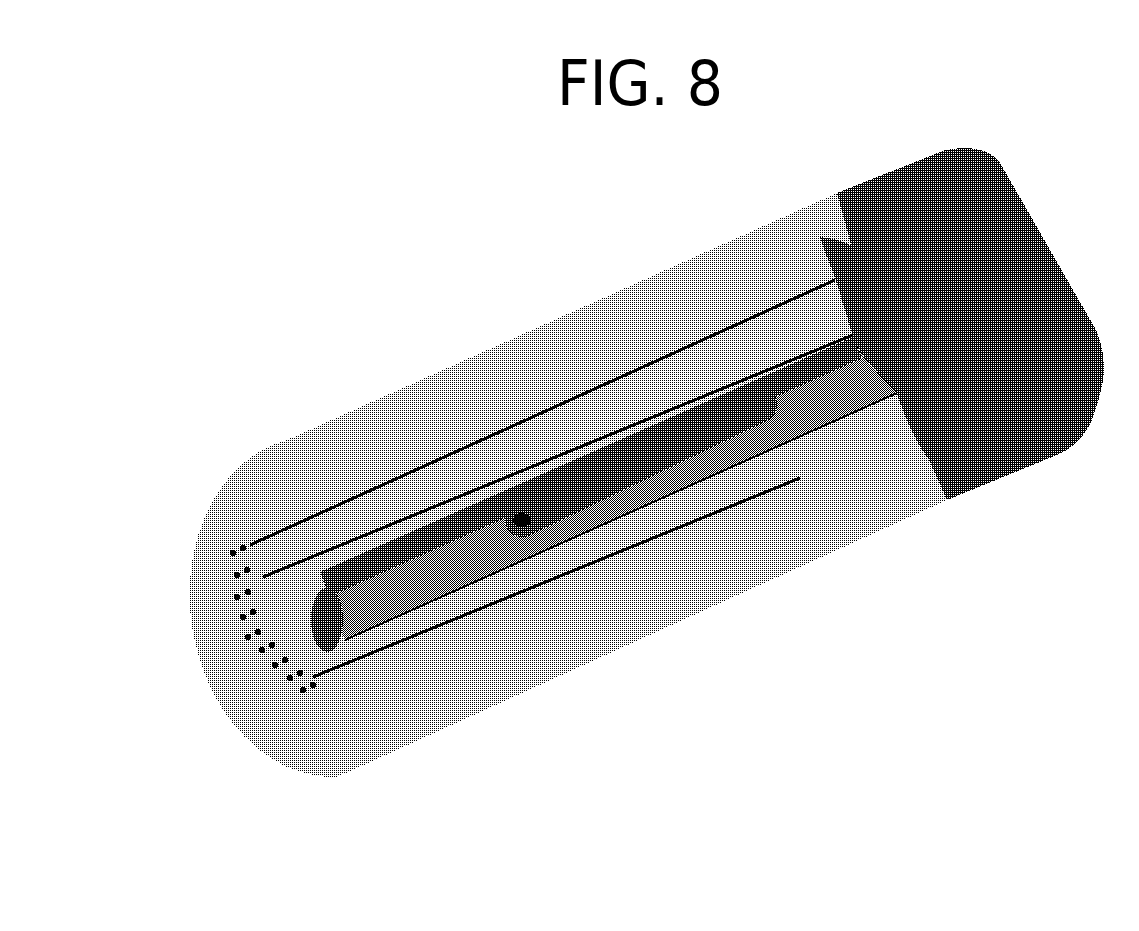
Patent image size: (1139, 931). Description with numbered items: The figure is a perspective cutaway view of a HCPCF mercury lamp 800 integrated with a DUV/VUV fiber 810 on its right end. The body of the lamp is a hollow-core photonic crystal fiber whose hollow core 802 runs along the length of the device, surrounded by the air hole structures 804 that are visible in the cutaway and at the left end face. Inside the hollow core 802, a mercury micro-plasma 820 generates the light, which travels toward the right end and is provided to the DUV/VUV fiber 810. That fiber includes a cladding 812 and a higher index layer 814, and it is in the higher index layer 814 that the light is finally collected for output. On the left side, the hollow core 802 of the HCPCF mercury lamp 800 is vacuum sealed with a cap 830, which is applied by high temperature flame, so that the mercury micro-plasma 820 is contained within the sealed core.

The HCPCF mercury lamp 800 is at (289, 192).
The hollow core 802 is at (447, 550).
The air hole structures 804 is at (610, 555).
The DUV/VUV fiber 810 is at (998, 478).
The cladding 812 is at (822, 220).
The higher index layer 814 is at (928, 438).
The mercury micro-plasma 820 is at (665, 482).
The cap 830 is at (340, 643).